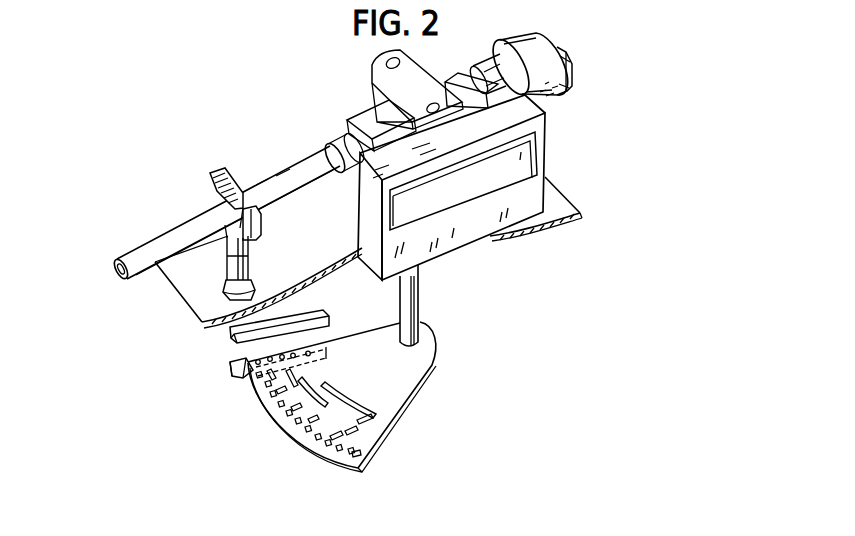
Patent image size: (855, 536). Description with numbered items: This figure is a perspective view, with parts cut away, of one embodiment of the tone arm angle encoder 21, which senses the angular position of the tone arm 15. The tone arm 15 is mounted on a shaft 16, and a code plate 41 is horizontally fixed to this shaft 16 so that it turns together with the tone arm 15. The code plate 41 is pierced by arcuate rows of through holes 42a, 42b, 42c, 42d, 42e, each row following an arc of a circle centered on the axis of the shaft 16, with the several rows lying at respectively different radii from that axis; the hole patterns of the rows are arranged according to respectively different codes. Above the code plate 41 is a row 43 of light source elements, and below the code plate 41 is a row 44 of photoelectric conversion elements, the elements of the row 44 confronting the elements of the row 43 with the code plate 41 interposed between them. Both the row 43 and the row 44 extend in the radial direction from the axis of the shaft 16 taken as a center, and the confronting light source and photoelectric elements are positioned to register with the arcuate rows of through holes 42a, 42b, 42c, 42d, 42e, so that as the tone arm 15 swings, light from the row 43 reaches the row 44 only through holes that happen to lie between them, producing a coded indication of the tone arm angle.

The tone arm 15 is at (262, 184).
The tone arm angle encoder 21 is at (308, 97).
The shaft 16 is at (418, 300).
The code plate 41 is at (433, 363).
The arcuate row of through holes 42a is at (312, 443).
The arcuate row of through holes 42b is at (368, 446).
The arcuate row of through holes 42c is at (363, 426).
The arcuate row of through holes 42d is at (307, 378).
The arcuate row of through holes 42e is at (368, 410).
The row of light source elements 43 is at (323, 315).
The row of photoelectric conversion elements 44 is at (232, 367).